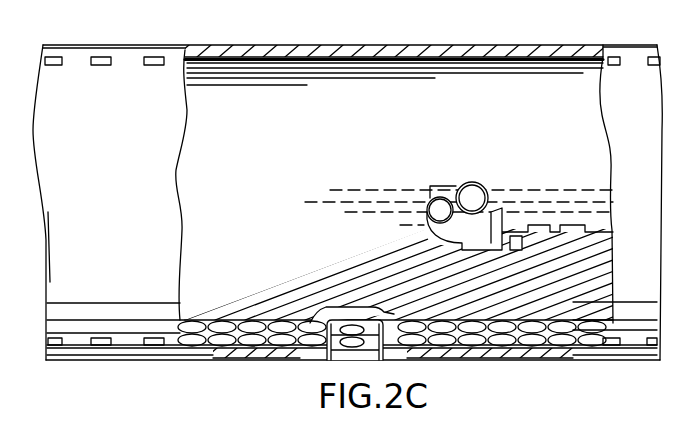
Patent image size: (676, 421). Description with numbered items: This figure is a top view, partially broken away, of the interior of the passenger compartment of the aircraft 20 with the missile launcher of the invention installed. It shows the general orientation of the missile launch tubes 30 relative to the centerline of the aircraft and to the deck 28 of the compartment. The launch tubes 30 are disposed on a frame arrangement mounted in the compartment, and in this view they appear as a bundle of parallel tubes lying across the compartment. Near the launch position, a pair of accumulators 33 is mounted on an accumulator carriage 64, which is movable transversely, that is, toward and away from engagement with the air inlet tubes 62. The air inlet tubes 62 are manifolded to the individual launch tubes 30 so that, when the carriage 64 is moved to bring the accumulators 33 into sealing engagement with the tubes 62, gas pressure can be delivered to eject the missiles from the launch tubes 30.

The aircraft 20 is at (516, 45).
The deck 28 is at (565, 114).
The missile launch tubes 30 is at (319, 268).
The accumulators 33 is at (470, 182).
The air inlet tubes 62 is at (520, 238).
The accumulator carriage 64 is at (440, 196).